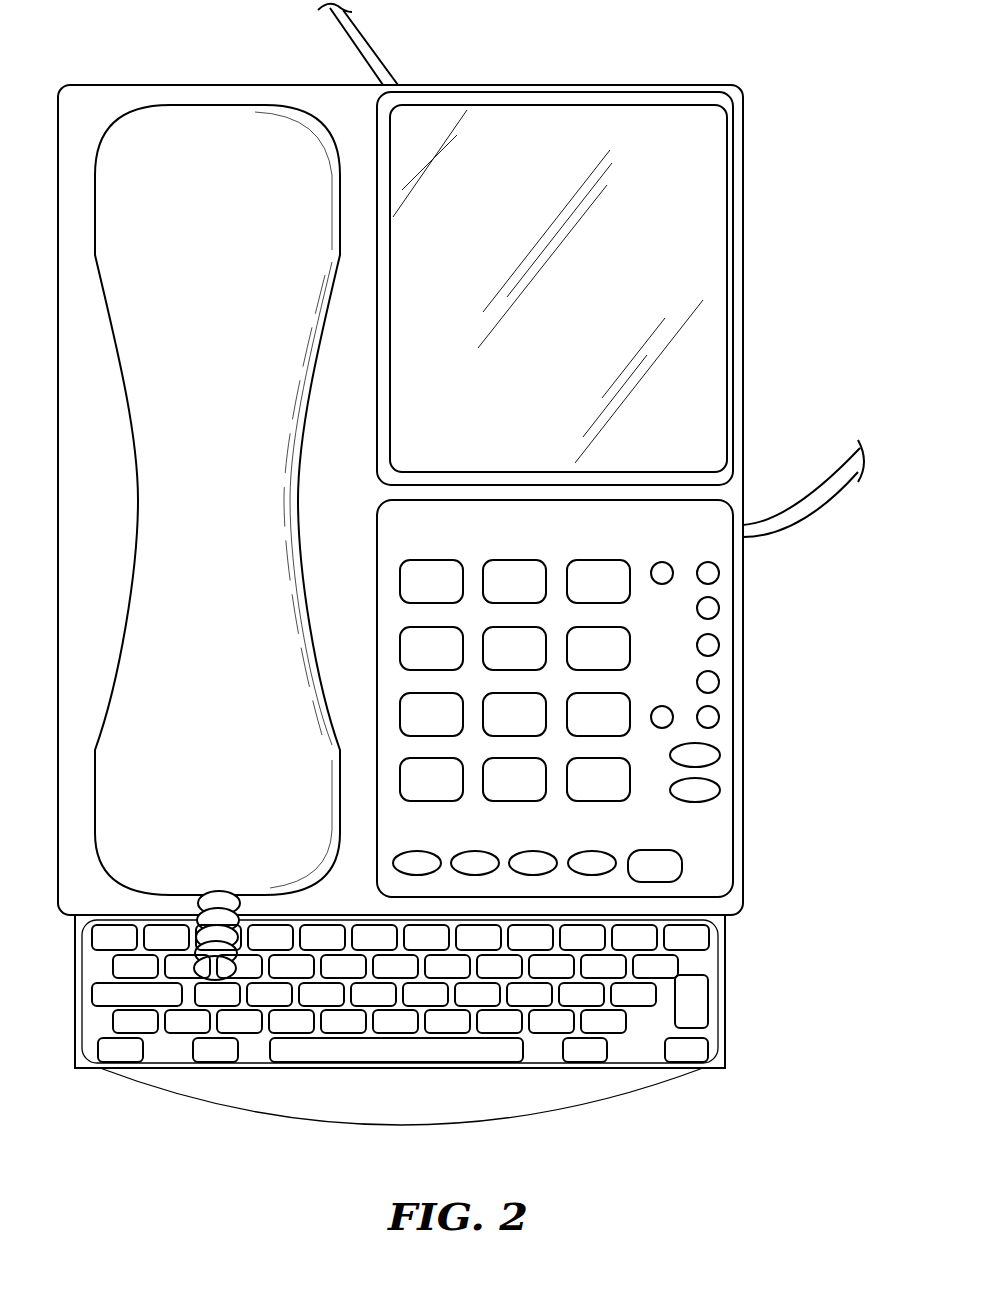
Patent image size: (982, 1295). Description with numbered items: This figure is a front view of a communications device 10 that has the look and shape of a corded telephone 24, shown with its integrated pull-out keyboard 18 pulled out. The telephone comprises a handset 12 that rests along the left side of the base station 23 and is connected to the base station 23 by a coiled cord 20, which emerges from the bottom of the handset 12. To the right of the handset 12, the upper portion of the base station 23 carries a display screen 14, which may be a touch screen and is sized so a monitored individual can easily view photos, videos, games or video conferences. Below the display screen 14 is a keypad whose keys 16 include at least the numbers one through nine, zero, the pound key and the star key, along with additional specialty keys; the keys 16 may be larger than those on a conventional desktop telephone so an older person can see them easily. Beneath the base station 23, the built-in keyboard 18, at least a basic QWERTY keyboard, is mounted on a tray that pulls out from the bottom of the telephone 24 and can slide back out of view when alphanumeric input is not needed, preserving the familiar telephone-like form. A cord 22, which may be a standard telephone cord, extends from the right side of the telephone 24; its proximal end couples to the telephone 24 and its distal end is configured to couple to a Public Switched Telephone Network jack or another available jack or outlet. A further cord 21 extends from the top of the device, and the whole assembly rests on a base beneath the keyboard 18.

The communications device 10 is at (163, 58).
The handset 12 is at (147, 504).
The display screen 14 is at (412, 387).
The keys 16 is at (603, 696).
The keyboard 18 is at (410, 1113).
The cord 20 is at (215, 896).
The power cord 21 is at (356, 43).
The cord 22 is at (780, 524).
The base station 23 is at (735, 786).
The corded telephone 24 is at (735, 689).